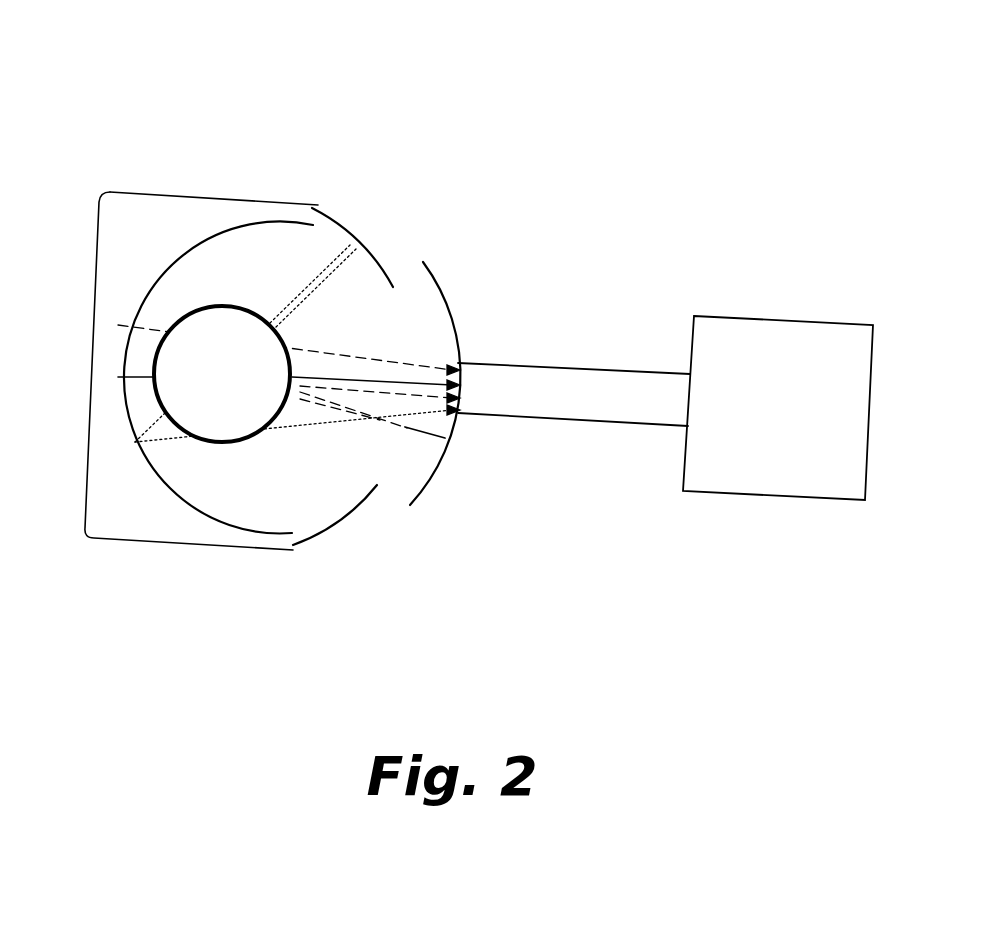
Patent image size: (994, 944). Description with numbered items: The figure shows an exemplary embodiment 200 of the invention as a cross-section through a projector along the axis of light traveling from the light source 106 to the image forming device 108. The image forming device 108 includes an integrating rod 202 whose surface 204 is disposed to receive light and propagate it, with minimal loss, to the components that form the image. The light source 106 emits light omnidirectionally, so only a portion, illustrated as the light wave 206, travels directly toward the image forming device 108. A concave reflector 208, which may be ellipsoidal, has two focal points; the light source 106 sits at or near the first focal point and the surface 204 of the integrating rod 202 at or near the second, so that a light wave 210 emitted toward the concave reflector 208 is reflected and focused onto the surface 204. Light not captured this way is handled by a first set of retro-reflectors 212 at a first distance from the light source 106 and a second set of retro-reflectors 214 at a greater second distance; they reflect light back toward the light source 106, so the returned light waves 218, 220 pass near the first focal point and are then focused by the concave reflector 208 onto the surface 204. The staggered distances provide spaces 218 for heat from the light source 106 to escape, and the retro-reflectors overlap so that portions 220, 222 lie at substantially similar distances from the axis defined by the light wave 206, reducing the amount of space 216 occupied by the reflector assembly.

The exemplary embodiment 200 is at (356, 52).
The integrating rod 202 is at (574, 394).
The surface 204 is at (460, 378).
The light wave 206 is at (408, 383).
The concave reflector 208 is at (223, 235).
The light wave 210 is at (120, 347).
The first set of retro-reflectors 212 is at (323, 217).
The second set of retro-reflectors 214 is at (442, 293).
The space 216 is at (90, 372).
The light waves / spaces 218 is at (302, 280).
The light wave / portion of retro-reflector 220 is at (383, 263).
The portion of retro-reflector 222 is at (430, 288).
The light source 106 is at (222, 374).
The image forming device 108 is at (778, 408).